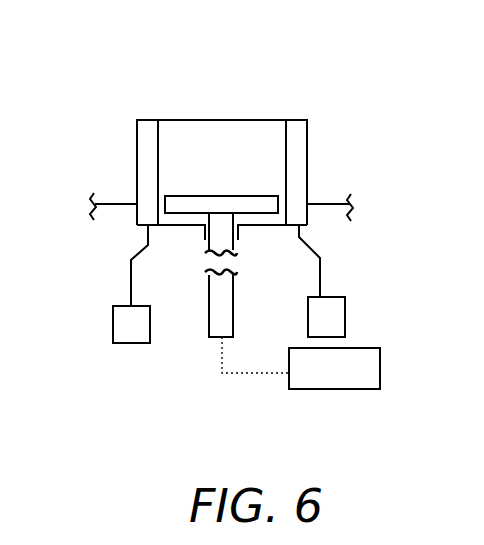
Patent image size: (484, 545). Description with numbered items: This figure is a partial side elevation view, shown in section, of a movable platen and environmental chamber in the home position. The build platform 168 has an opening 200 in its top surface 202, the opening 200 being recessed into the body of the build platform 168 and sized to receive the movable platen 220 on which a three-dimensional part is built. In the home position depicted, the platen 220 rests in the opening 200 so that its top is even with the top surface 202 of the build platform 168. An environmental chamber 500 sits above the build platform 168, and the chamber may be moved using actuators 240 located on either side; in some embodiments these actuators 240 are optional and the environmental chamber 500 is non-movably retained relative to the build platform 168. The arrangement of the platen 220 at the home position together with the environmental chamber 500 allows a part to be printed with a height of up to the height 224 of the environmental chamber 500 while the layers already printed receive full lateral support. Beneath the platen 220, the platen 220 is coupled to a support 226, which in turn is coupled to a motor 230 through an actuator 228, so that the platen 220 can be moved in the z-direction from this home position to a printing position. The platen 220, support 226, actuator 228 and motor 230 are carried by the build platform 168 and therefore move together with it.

The environmental chamber 500 is at (307, 138).
The top surface 202 is at (322, 202).
The movable platen 220 is at (240, 196).
The height 224 is at (125, 120).
The support 226 is at (237, 252).
The actuator 228 is at (233, 301).
The motor 230 is at (380, 370).
The opening 200 is at (170, 230).
The build platform 168 is at (310, 212).
The actuators 240 is at (113, 322).